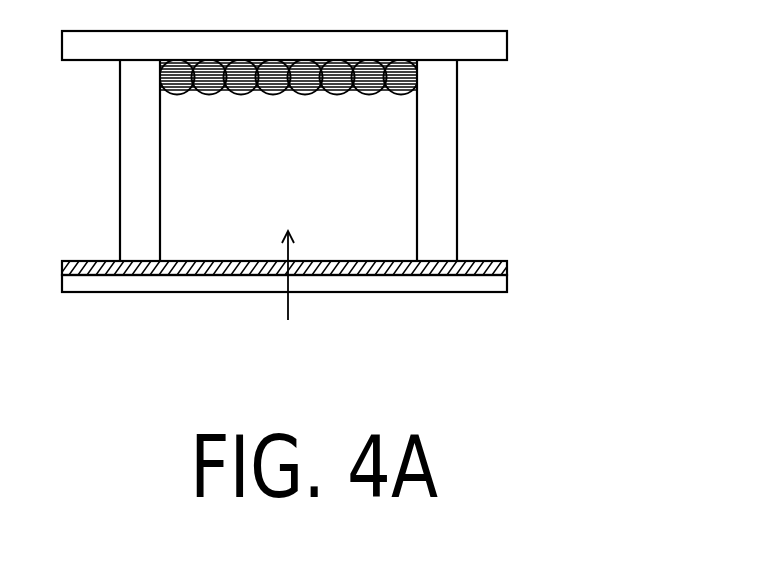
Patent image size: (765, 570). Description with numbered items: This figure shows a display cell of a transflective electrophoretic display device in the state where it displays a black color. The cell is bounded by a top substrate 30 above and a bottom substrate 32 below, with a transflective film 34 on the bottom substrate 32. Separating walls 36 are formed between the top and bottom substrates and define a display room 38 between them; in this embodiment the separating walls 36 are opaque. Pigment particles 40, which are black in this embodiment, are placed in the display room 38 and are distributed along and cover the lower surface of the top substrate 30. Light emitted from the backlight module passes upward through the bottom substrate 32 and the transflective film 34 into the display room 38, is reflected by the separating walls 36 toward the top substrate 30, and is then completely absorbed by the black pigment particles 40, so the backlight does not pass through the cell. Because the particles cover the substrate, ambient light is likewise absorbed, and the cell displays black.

The top substrate 30 is at (501, 46).
The bottom substrate 32 is at (478, 285).
The transflective film 34 is at (500, 267).
The separating walls 36 is at (445, 143).
The display rooms 38 is at (398, 189).
The pigment particles 40 is at (418, 87).